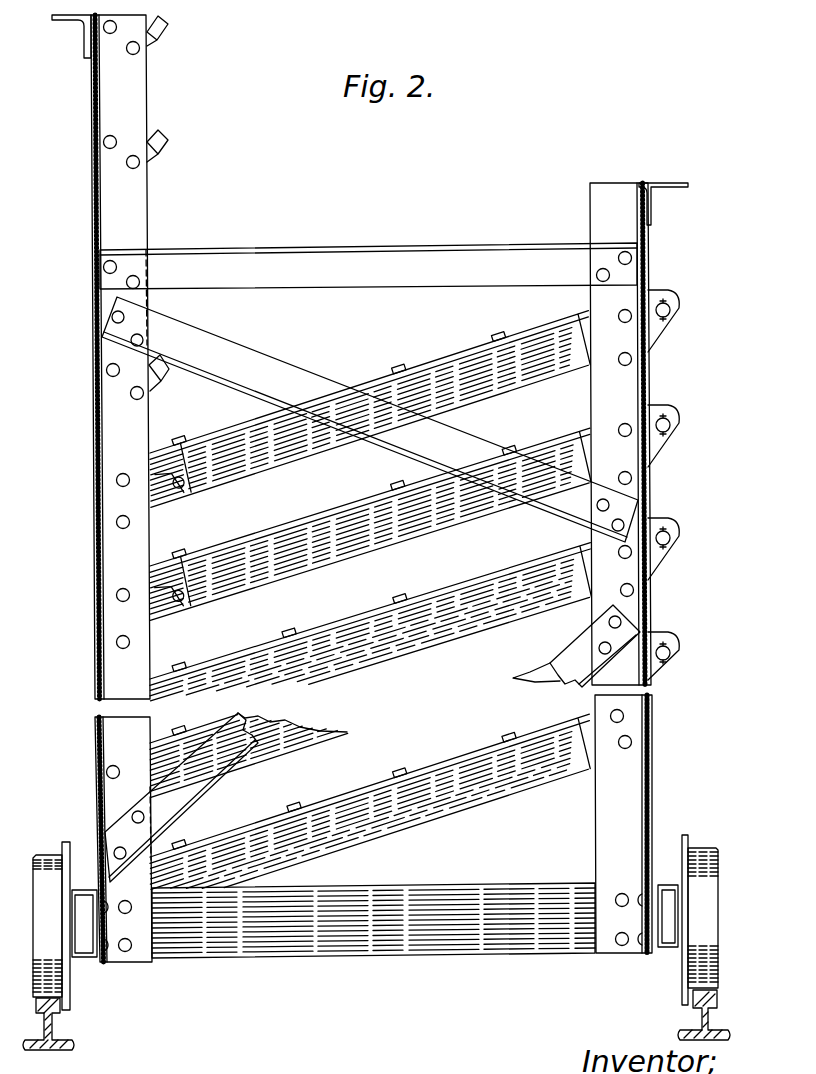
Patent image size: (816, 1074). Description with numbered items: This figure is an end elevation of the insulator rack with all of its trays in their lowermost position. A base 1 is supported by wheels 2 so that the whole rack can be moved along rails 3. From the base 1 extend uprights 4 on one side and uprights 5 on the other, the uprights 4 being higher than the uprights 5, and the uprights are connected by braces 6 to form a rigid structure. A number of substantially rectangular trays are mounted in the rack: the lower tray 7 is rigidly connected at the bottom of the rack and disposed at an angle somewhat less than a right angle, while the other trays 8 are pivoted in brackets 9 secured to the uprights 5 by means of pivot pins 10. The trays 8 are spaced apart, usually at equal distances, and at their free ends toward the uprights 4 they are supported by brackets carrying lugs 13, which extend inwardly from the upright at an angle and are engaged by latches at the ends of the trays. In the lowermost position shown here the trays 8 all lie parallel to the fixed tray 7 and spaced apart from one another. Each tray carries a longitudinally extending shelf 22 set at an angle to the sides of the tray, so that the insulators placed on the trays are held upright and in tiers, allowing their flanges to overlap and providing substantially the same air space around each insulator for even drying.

The base 1 is at (400, 958).
The wheels 2 is at (44, 858).
The rails 3 is at (60, 1030).
The uprights 4 is at (140, 222).
The uprights 5 is at (607, 213).
The braces 6 is at (75, 21).
The lower tray 7 is at (433, 813).
The trays 8 is at (470, 386).
The brackets 9 is at (656, 333).
The pivot pins 10 is at (669, 312).
The lugs 13 is at (160, 36).
The shelf 22 is at (483, 333).